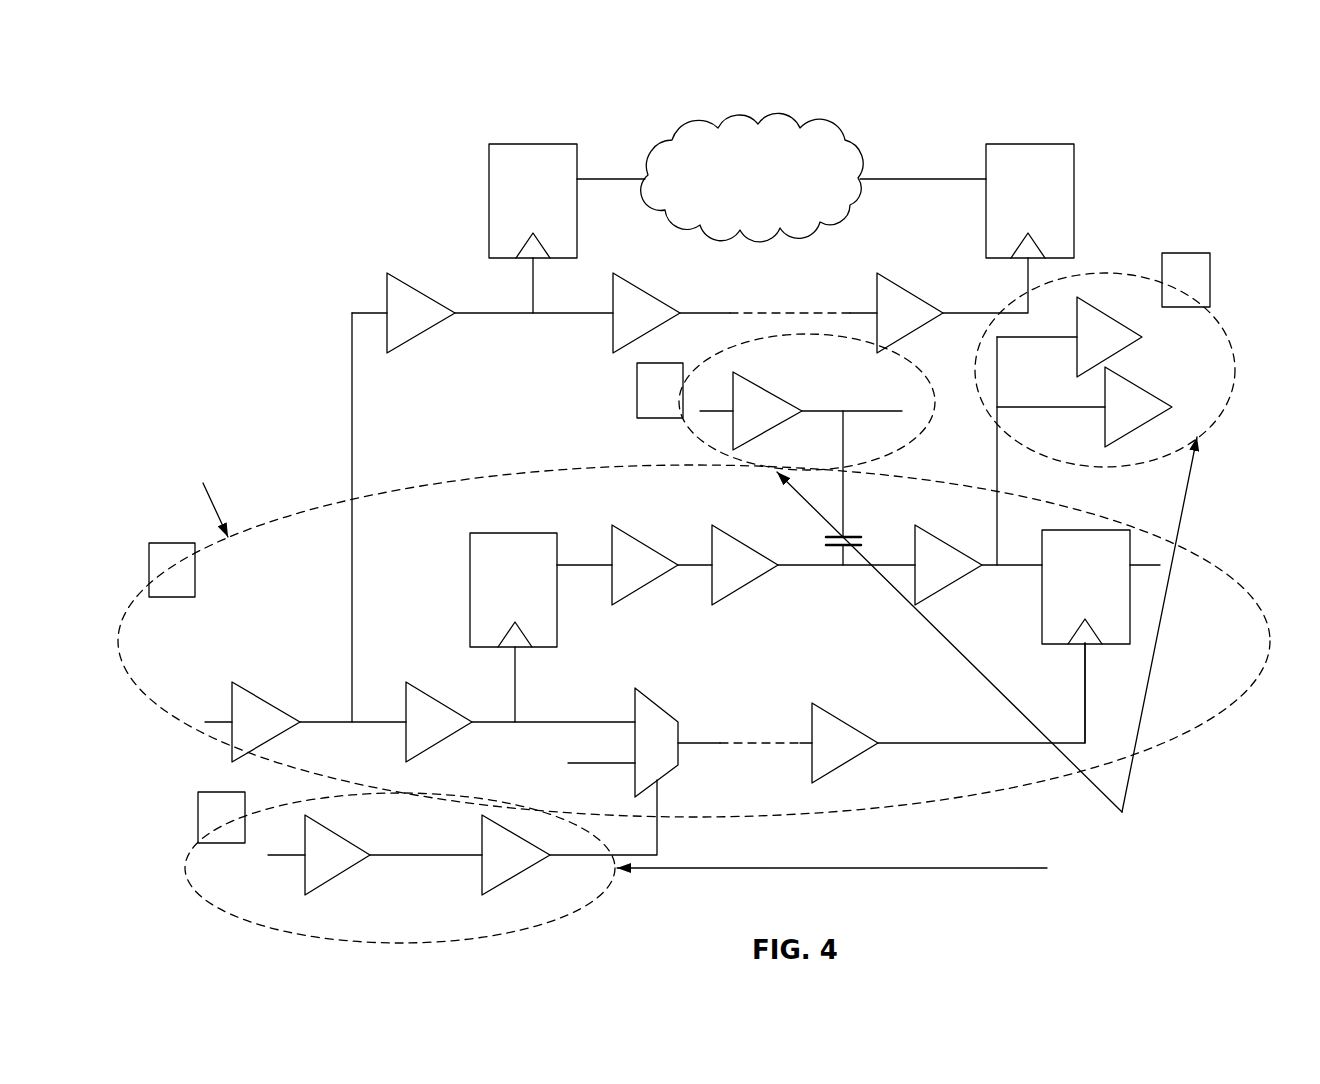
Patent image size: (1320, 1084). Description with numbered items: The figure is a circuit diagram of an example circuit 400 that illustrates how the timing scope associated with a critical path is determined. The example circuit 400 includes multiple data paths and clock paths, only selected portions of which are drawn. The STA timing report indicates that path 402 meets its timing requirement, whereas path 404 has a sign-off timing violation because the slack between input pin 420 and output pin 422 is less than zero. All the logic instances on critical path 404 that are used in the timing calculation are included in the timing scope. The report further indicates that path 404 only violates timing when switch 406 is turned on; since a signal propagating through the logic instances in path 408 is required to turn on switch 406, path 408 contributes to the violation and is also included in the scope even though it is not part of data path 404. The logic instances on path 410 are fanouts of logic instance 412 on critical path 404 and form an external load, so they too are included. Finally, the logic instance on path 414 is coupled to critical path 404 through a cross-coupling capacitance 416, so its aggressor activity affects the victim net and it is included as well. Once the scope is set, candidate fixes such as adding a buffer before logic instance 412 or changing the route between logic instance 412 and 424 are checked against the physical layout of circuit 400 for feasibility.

The example circuit 400 is at (225, 143).
The path 402 is at (843, 138).
The critical path 404 is at (1230, 575).
The switch 406 is at (655, 700).
The path 408 is at (280, 805).
The path 410 is at (1217, 422).
The logic instance 412 is at (955, 572).
The path 414 is at (930, 387).
The cross-coupling capacitance 416 is at (845, 522).
The input pin 420 is at (213, 722).
The output pin 422 is at (1145, 567).
The route endpoint 424 is at (1062, 645).